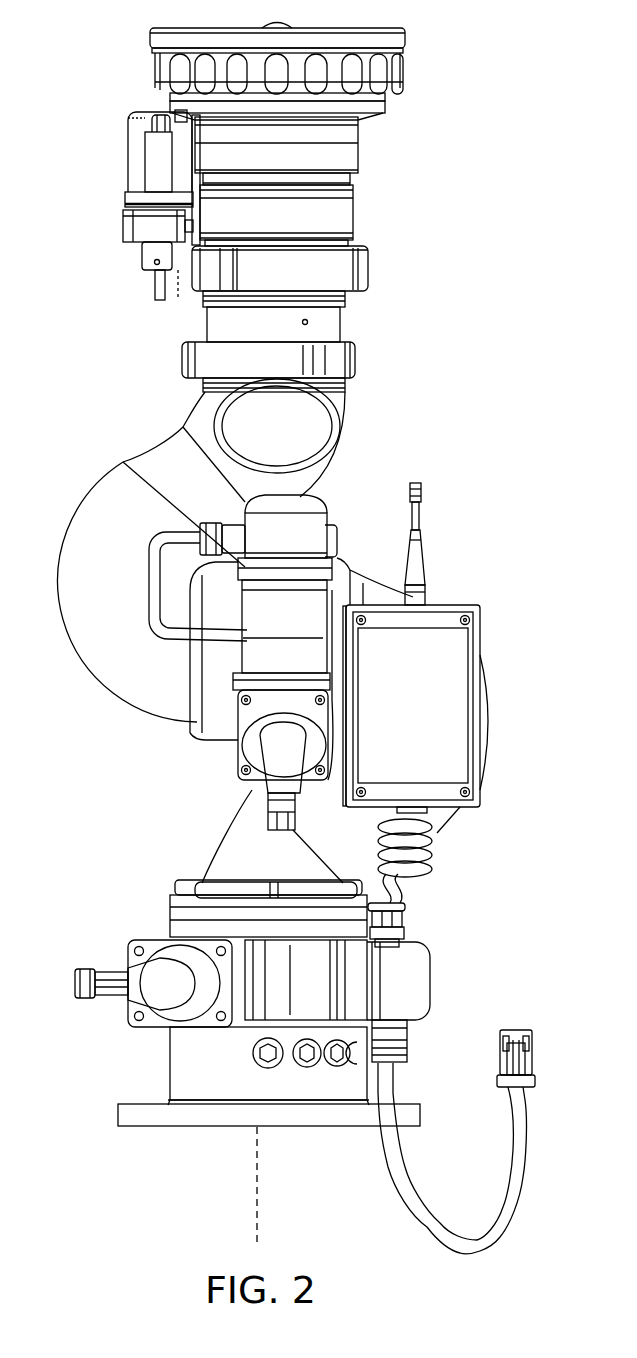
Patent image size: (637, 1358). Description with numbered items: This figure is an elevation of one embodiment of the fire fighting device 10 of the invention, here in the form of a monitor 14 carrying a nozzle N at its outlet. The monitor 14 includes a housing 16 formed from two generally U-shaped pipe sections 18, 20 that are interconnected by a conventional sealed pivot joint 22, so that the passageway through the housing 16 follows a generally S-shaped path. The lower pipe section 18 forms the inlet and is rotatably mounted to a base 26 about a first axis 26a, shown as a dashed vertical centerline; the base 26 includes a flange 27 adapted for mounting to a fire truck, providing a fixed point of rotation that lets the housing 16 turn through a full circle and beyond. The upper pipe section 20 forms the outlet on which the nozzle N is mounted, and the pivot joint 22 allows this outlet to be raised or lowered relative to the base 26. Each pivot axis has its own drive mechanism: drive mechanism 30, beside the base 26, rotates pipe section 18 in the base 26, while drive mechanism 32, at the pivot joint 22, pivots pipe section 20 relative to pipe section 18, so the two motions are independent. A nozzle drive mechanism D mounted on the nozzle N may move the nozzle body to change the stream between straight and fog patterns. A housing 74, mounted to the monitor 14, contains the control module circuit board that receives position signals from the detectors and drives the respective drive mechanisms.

The nozzle N is at (360, 215).
The nozzle drive mechanism D is at (160, 172).
The fire fighting device 10 is at (59, 323).
The monitor 14 is at (62, 446).
The housing 16 is at (90, 630).
The pipe section 20 is at (65, 548).
The drive mechanism 32 is at (297, 530).
The pivot joint 22 is at (227, 723).
The housing 74 is at (426, 710).
The pipe section 18 is at (490, 722).
The drive mechanism 30 is at (400, 965).
The base 26 is at (190, 1065).
The flange 27 is at (130, 1118).
The first axis 26a is at (258, 1184).